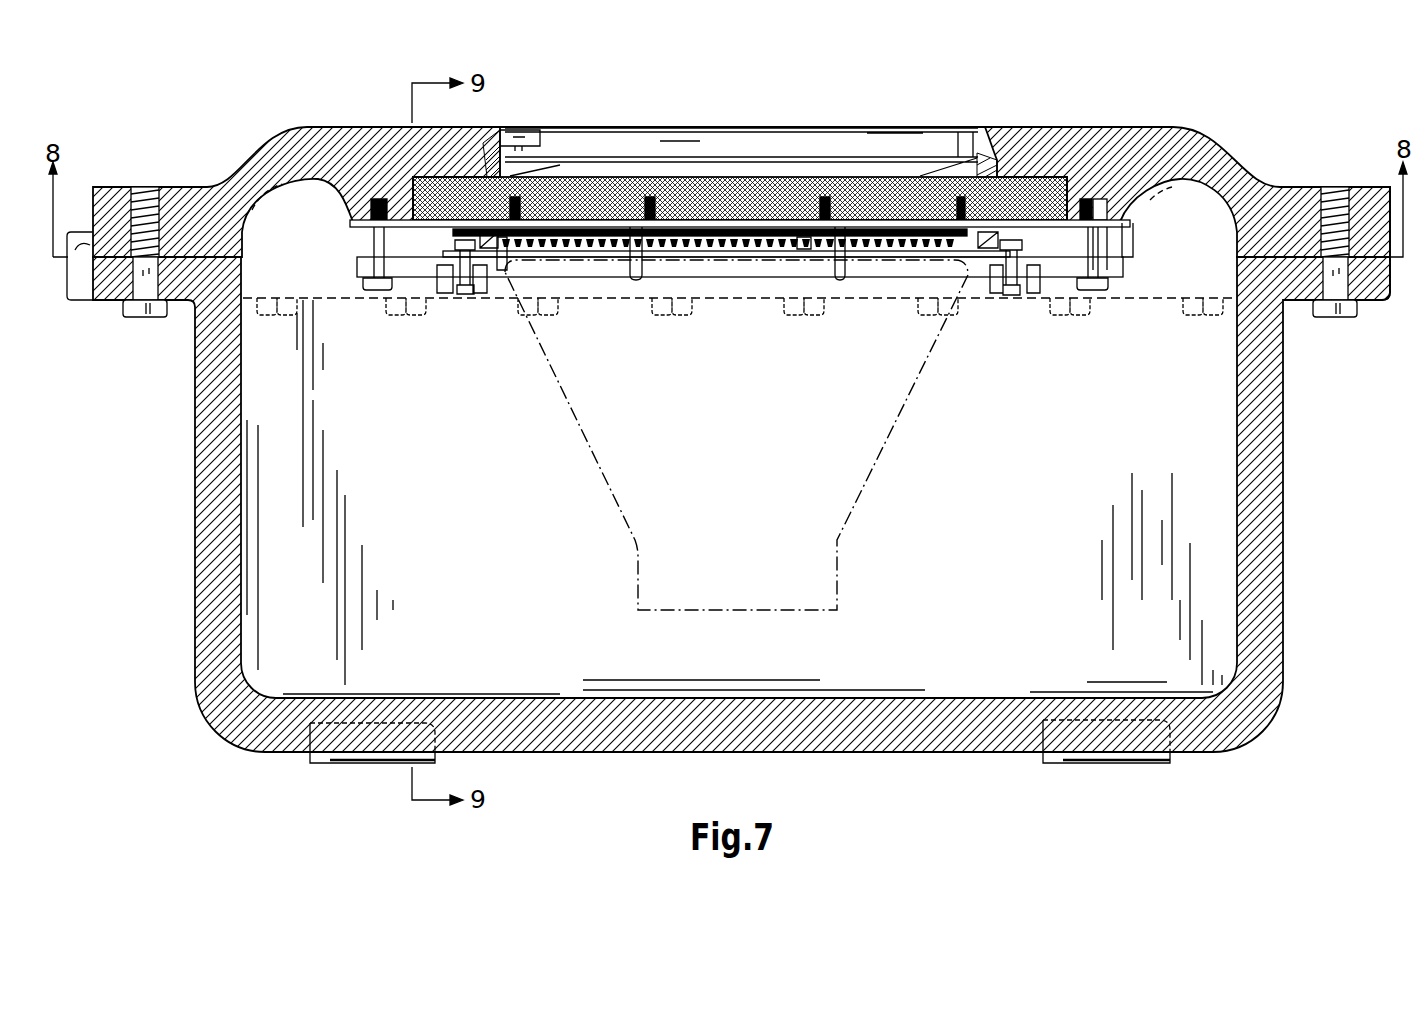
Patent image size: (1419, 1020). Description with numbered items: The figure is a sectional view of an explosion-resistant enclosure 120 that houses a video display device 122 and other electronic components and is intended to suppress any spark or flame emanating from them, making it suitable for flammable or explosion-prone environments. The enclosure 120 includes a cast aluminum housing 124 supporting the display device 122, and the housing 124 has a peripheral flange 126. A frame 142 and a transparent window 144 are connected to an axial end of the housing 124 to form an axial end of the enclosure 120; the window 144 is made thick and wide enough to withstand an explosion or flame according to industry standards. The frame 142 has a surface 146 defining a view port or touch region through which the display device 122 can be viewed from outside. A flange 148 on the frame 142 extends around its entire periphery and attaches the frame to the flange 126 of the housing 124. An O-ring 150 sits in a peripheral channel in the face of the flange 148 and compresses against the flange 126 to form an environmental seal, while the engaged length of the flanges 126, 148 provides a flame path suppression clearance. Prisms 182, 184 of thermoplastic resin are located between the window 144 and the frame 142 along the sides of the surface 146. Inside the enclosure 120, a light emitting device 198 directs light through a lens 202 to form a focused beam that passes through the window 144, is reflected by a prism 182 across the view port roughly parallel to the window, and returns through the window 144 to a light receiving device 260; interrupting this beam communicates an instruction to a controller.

The explosion-resistant enclosure 120 is at (1193, 129).
The video display device 122 is at (840, 470).
The housing 124 is at (1262, 503).
The peripheral flange 126 is at (1382, 293).
The frame 142 is at (1053, 140).
The transparent window 144 is at (773, 207).
The surface 146 is at (515, 145).
The flange 148 is at (1300, 190).
The O-ring 150 is at (1310, 250).
The prism 182 is at (980, 168).
The prism 184 is at (647, 170).
The light emitting device 198 is at (998, 242).
The lens 202 is at (987, 233).
The light receiving device 260 is at (352, 247).